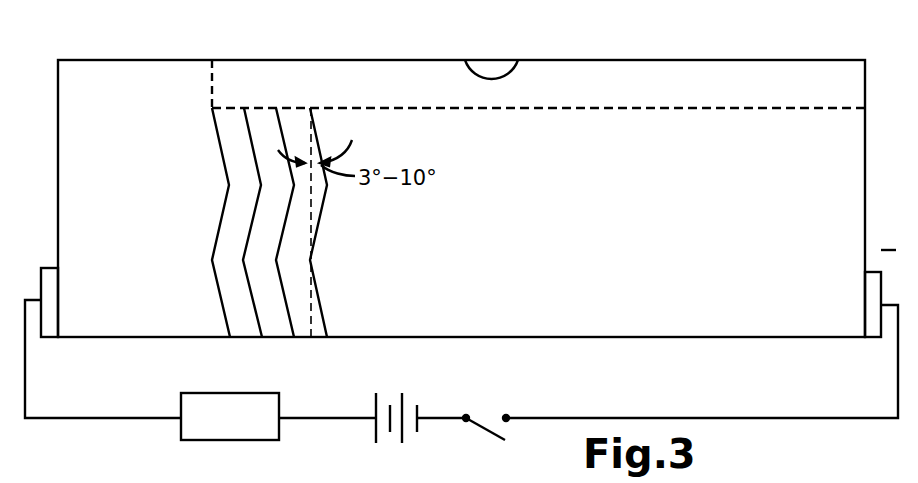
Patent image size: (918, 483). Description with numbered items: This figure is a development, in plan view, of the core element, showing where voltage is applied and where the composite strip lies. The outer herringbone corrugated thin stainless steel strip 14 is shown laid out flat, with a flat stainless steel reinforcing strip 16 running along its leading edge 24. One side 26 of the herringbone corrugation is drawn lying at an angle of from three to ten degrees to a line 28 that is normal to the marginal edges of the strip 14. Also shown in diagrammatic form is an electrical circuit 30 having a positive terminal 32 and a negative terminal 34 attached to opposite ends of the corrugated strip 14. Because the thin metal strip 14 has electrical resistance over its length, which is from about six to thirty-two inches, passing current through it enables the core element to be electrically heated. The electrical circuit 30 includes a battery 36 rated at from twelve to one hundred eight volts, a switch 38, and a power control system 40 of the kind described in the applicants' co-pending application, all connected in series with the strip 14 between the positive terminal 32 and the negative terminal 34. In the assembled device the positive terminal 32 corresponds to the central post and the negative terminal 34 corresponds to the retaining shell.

The corrugated thin stainless steel strip 14 is at (461, 198).
The flat stainless steel reinforcing strip 16 is at (667, 91).
The leading edge 24 is at (518, 60).
The side of the herringbone corrugation 26 is at (325, 130).
The line normal to the marginal edges 28 is at (311, 220).
The electrical circuit 30 is at (176, 443).
The positive terminal 32 is at (48, 328).
The negative terminal 34 is at (871, 328).
The battery 36 is at (388, 391).
The switch 38 is at (488, 415).
The power control system 40 is at (218, 402).